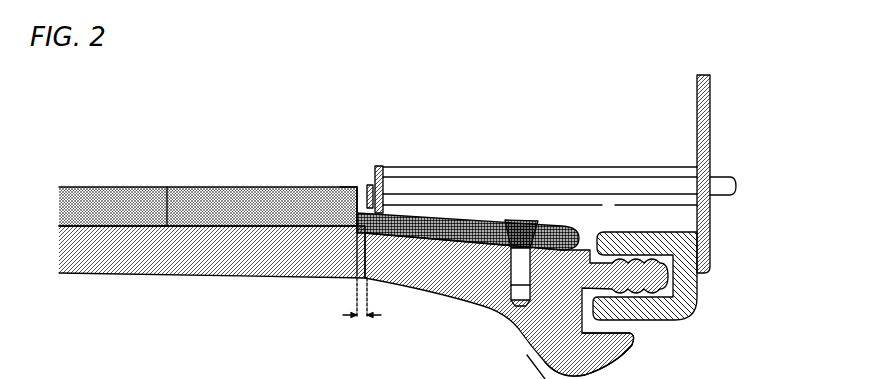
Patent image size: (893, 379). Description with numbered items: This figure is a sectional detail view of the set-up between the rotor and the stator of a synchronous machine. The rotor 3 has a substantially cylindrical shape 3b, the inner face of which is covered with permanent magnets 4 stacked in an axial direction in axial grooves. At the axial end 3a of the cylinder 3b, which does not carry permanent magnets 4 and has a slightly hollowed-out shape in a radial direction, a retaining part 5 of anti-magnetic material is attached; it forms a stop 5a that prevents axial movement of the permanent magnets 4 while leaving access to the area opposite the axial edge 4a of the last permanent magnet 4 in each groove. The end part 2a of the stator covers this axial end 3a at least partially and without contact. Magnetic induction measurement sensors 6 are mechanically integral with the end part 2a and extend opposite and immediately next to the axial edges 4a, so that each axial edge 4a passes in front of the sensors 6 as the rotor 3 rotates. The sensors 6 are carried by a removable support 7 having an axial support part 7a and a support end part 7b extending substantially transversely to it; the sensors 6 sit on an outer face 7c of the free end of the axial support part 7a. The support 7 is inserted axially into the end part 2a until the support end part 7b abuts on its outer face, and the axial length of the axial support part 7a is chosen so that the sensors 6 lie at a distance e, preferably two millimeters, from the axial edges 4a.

The end part 2a is at (703, 290).
The rotor 3 is at (118, 291).
The axial end 3a is at (648, 340).
The cylindrical shape 3b is at (233, 278).
The permanent magnets 4 is at (108, 186).
The axial edge 4a is at (345, 186).
The retaining part 5 is at (457, 303).
The stop 5a is at (390, 289).
The magnetic induction measurement sensors 6 is at (369, 185).
The removable support 7 is at (571, 174).
The axial support part 7a is at (541, 167).
The support end part 7b is at (712, 218).
The outer face 7c is at (380, 167).
The distance e is at (362, 311).